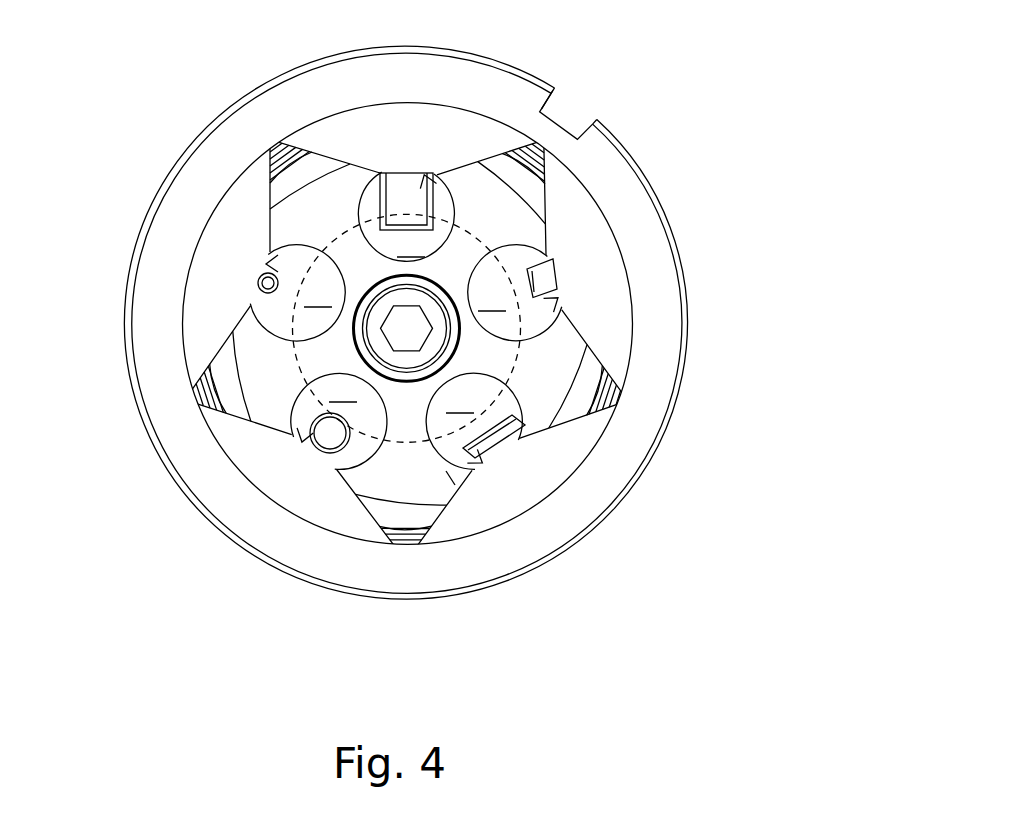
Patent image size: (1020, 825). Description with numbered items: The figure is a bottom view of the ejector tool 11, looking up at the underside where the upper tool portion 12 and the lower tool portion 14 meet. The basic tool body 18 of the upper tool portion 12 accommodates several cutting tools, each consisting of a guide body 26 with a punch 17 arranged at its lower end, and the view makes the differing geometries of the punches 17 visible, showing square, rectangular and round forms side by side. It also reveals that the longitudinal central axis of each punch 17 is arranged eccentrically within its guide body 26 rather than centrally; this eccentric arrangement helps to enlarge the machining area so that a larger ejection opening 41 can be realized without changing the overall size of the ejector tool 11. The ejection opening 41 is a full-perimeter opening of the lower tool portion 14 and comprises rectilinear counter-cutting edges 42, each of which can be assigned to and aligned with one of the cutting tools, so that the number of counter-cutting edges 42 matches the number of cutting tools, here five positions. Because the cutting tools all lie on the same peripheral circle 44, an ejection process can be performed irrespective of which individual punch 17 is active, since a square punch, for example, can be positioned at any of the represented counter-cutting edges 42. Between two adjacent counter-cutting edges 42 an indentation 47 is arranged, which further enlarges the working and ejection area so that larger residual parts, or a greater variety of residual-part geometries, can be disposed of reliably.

The ejector tool 11 is at (702, 122).
The upper tool portion 12 is at (516, 225).
The lower tool portion 14 is at (297, 545).
The punch 17 is at (404, 195).
The basic tool body 18 is at (560, 377).
The guide body 26 is at (416, 321).
The ejection opening 41 is at (450, 480).
The counter-cutting edges 42 is at (437, 173).
The peripheral circle 44 is at (348, 230).
The indentation 47 is at (342, 140).